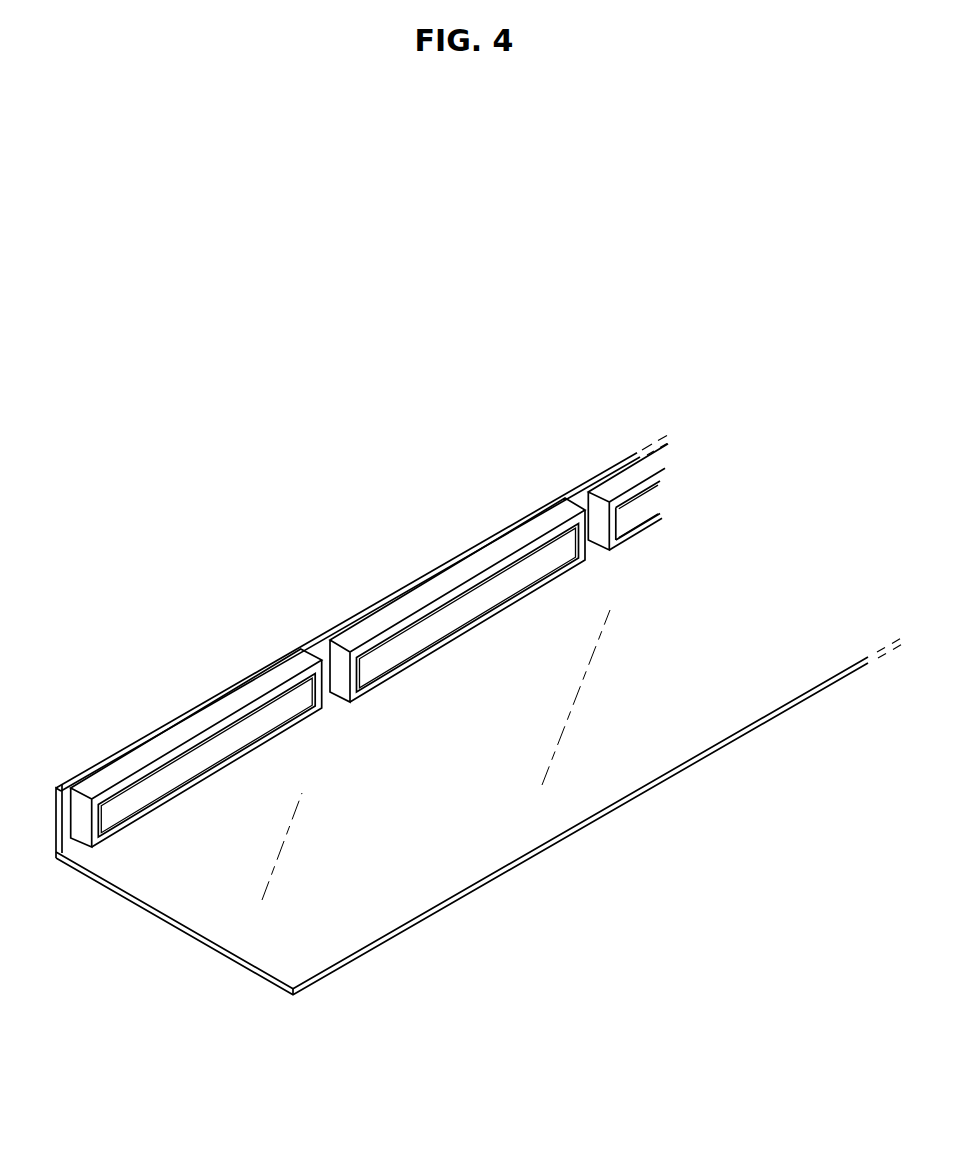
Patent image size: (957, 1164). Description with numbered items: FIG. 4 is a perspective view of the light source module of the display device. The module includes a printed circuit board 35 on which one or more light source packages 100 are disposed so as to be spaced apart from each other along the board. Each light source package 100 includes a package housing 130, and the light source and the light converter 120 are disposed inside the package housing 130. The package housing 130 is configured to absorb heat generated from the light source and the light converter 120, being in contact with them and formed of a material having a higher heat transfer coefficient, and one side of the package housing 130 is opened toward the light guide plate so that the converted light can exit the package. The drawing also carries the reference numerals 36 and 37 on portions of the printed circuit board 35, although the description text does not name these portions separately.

The printed circuit board 35 is at (460, 719).
The base plate 36 is at (147, 902).
The vertical wall portion 37 is at (56, 825).
The light source package 100 is at (369, 645).
The light converter 120 is at (181, 770).
The package housing 130 is at (250, 698).